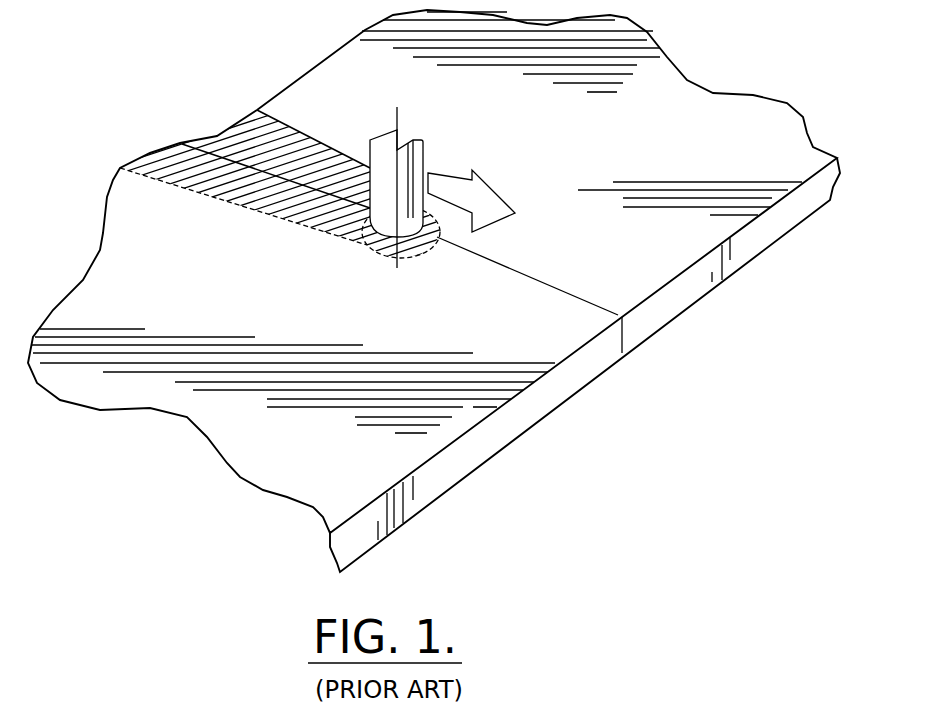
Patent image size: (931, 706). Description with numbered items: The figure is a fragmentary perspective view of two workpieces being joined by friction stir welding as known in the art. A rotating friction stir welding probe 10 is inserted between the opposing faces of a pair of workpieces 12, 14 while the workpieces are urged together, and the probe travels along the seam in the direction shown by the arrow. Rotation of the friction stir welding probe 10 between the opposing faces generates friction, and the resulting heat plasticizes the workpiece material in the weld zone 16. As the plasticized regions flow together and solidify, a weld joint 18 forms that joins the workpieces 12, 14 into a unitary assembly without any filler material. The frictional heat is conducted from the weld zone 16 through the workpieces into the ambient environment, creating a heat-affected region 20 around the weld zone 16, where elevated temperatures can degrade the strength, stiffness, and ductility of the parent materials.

The friction stir welding probe 10 is at (442, 201).
The workpiece 12 is at (432, 271).
The workpiece 14 is at (585, 365).
The weld zone 16 is at (380, 250).
The weld joint 18 is at (285, 200).
The heat-affected region 20 is at (245, 168).